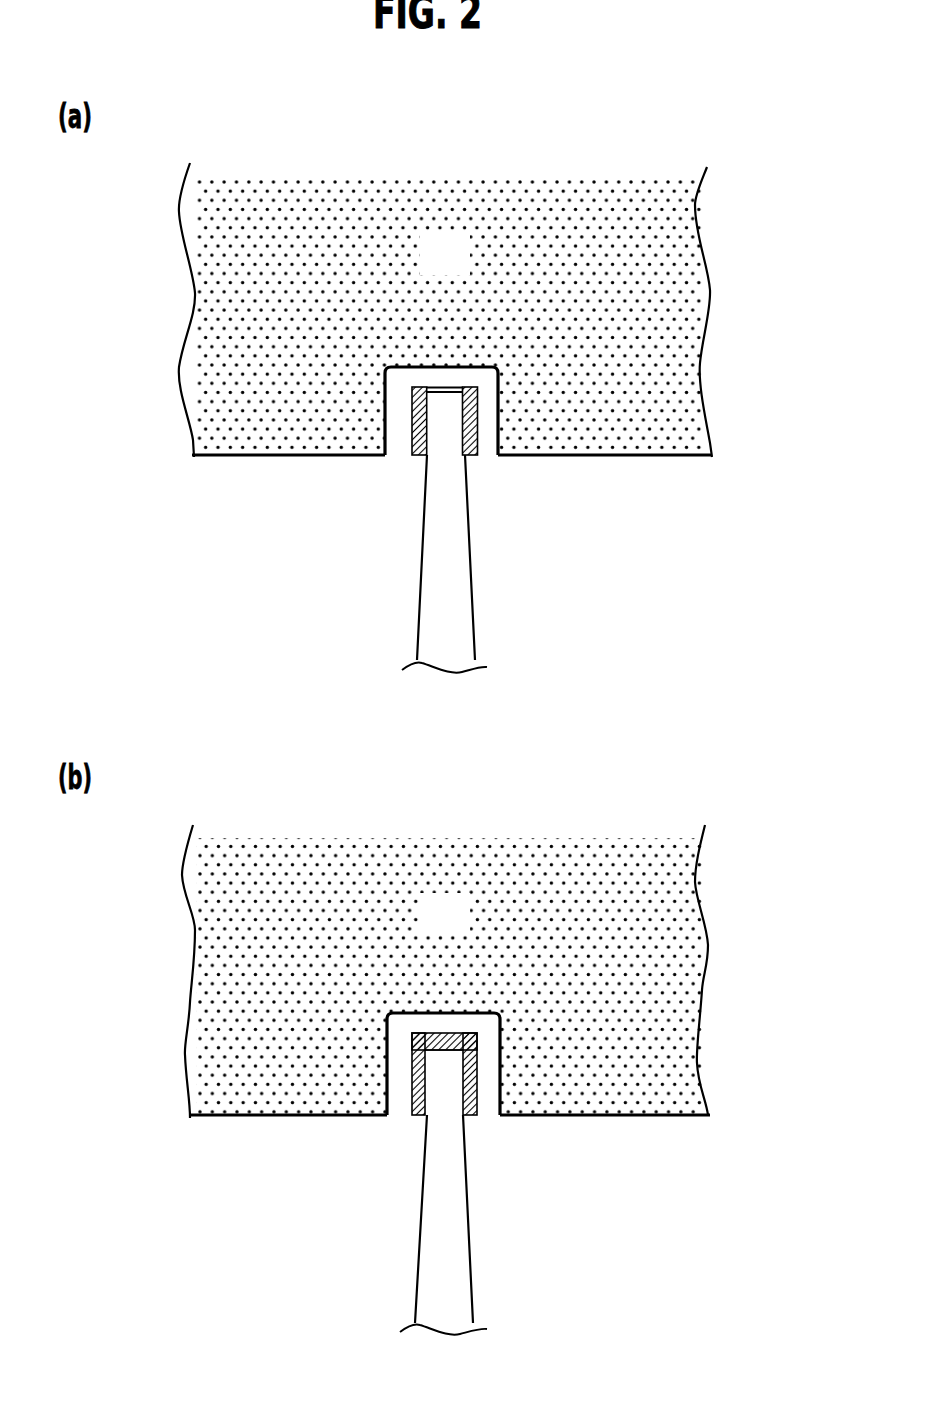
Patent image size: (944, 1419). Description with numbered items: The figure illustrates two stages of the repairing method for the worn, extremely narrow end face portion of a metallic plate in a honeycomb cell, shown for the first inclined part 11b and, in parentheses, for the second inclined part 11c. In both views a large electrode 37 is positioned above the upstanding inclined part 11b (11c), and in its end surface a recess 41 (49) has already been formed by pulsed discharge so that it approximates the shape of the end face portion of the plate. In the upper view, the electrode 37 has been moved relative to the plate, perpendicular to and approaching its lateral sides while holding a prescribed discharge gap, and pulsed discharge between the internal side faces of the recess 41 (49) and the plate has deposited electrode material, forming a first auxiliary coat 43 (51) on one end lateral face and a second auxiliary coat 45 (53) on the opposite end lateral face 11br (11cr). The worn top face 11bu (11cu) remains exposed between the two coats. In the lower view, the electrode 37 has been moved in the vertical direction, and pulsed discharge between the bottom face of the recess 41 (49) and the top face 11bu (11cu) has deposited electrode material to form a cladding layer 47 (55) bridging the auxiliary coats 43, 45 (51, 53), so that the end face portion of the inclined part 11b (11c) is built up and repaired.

The electrode 37 is at (468, 272).
The recess 41 is at (604, 720).
The recess 49 is at (452, 365).
The first auxiliary coat 43 is at (328, 786).
The second auxiliary coat 51 is at (412, 420).
The second auxiliary coat 45 is at (562, 786).
The second auxiliary coat 53 is at (478, 422).
The cladding layer 47 is at (274, 990).
The cladding layer 55 is at (437, 1033).
The first inclined part 11b is at (521, 895).
The second inclined part 11c is at (473, 558).
The end lateral face 11br is at (336, 503).
The end lateral face 11cr is at (462, 426).
The top face 11bu is at (354, 1152).
The top face 11cu is at (452, 1050).